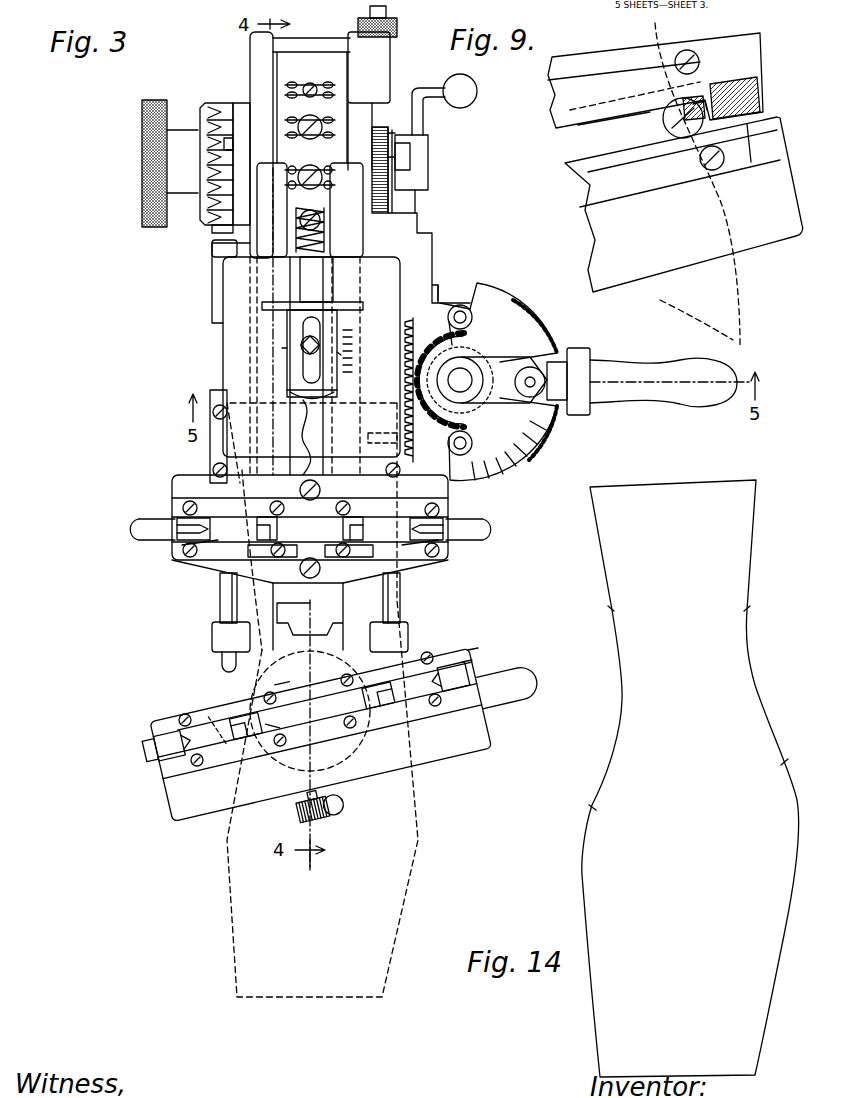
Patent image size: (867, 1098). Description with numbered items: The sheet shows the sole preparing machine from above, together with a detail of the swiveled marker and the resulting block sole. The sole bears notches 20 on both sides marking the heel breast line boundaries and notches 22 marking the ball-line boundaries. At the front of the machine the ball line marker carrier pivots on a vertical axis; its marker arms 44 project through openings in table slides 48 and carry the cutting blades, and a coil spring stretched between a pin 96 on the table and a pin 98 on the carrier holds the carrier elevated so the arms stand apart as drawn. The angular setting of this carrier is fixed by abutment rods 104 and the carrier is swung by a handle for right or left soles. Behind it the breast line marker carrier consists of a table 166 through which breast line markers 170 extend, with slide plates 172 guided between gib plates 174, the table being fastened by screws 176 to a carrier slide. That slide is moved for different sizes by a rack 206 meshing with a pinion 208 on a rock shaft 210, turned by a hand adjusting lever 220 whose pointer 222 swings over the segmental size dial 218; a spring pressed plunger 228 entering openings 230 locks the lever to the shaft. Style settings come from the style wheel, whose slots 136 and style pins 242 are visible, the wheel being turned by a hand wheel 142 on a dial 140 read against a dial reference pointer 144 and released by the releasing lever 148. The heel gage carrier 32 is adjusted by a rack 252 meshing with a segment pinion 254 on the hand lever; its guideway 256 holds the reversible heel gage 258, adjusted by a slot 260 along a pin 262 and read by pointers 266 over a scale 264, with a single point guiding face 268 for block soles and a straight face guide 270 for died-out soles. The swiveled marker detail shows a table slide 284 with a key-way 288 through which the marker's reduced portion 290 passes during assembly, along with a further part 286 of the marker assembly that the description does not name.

In FIG. 14, the notches 20 is at (746, 609).
In FIG. 14, the notches 22 is at (595, 810).
In FIG. 3, the heel gage carrier 32 is at (395, 283).
In FIG. 3, the marker arms 44 is at (338, 740).
In FIG. 3, the table slides 48 is at (416, 652).
In FIG. 3, the pin 96 is at (472, 660).
In FIG. 3, the pin 98 is at (478, 650).
In FIG. 3, the abutment rods 104 is at (393, 588).
In FIG. 3, the center slot 136 is at (300, 86).
In FIG. 3, the dial 140 is at (205, 228).
In FIG. 3, the hand wheel 142 is at (142, 183).
In FIG. 3, the dial reference pointer 144 is at (240, 138).
In FIG. 3, the releasing lever 148 is at (468, 105).
In FIG. 3, the table 166 is at (180, 483).
In FIG. 3, the breast line markers 170 is at (178, 520).
In FIG. 3, the slide plates 172 is at (188, 563).
In FIG. 3, the gib plates 174 is at (240, 517).
In FIG. 3, the screws 176 is at (304, 498).
In FIG. 3, the rack 206 is at (424, 450).
In FIG. 3, the pinion 208 is at (464, 428).
In FIG. 3, the rock shaft 210 is at (463, 372).
In FIG. 3, the segmental size dial 218 is at (540, 322).
In FIG. 3, the hand adjusting lever 220 is at (705, 395).
In FIG. 3, the pointer 222 is at (553, 415).
In FIG. 3, the spring pressed plunger 228 is at (524, 387).
In FIG. 3, the openings 230 is at (541, 456).
In FIG. 3, the style pins 242 is at (326, 222).
In FIG. 3, the rack 252 is at (445, 300).
In FIG. 3, the segment pinion 254 is at (463, 358).
In FIG. 3, the guideway 256 is at (306, 286).
In FIG. 3, the heel gage 258 is at (298, 326).
In FIG. 3, the slot 260 is at (316, 328).
In FIG. 3, the pin 262 is at (301, 345).
In FIG. 3, the scale 264 is at (353, 332).
In FIG. 3, the pointers 266 is at (282, 350).
In FIG. 3, the single point guiding face 268 is at (310, 420).
In FIG. 3, the straight face guide 270 is at (295, 300).
In FIG. 9, the table slide 284 is at (722, 166).
In FIG. 9, the pin 286 is at (664, 122).
In FIG. 9, the key-way 288 is at (735, 88).
In FIG. 9, the reduced portion 290 is at (695, 106).